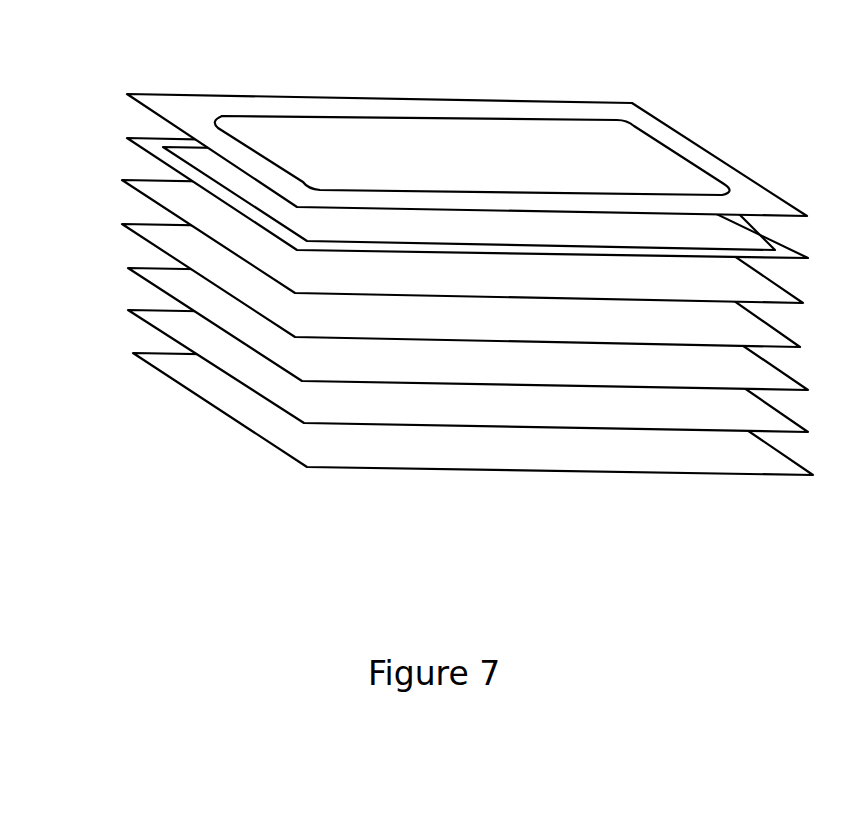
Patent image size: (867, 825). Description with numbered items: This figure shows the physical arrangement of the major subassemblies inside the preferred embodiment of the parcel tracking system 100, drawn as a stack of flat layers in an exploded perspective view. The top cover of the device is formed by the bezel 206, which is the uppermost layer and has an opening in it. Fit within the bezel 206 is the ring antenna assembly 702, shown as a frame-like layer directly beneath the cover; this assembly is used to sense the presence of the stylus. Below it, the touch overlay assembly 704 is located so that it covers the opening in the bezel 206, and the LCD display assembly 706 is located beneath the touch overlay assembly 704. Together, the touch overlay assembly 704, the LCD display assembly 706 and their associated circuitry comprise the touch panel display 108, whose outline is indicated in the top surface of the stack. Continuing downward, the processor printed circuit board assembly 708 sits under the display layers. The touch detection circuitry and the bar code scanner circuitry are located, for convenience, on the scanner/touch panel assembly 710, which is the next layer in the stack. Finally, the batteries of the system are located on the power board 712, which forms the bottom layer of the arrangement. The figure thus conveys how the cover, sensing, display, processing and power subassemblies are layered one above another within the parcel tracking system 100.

The parcel tracking system 100 is at (326, 62).
The touch panel display 108 is at (622, 166).
The bezel 206 is at (182, 110).
The ring antenna assembly 702 is at (148, 140).
The touch overlay assembly 704 is at (158, 193).
The LCD display assembly 706 is at (148, 230).
The processor printed circuit board assembly 708 is at (157, 277).
The scanner/touch panel assembly 710 is at (157, 318).
The power board 712 is at (157, 357).